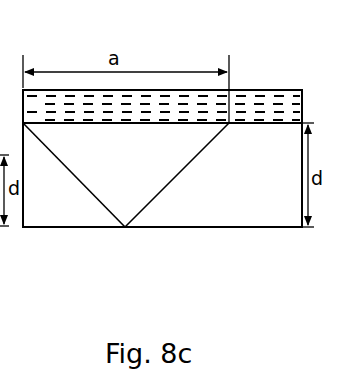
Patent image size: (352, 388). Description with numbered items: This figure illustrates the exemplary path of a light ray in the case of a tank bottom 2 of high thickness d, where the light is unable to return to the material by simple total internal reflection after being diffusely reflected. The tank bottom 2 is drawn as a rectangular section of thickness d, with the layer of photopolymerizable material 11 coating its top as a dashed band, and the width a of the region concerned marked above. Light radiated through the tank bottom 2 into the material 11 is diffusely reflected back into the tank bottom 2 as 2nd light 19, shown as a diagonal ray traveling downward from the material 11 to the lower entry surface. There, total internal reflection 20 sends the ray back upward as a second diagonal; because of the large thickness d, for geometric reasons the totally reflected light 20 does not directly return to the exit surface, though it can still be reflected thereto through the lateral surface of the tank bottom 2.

The tank bottom 2 is at (45, 198).
The photopolymerizable material 11 is at (264, 102).
The 2nd light 19 is at (160, 195).
The total internal reflection 20 is at (98, 202).